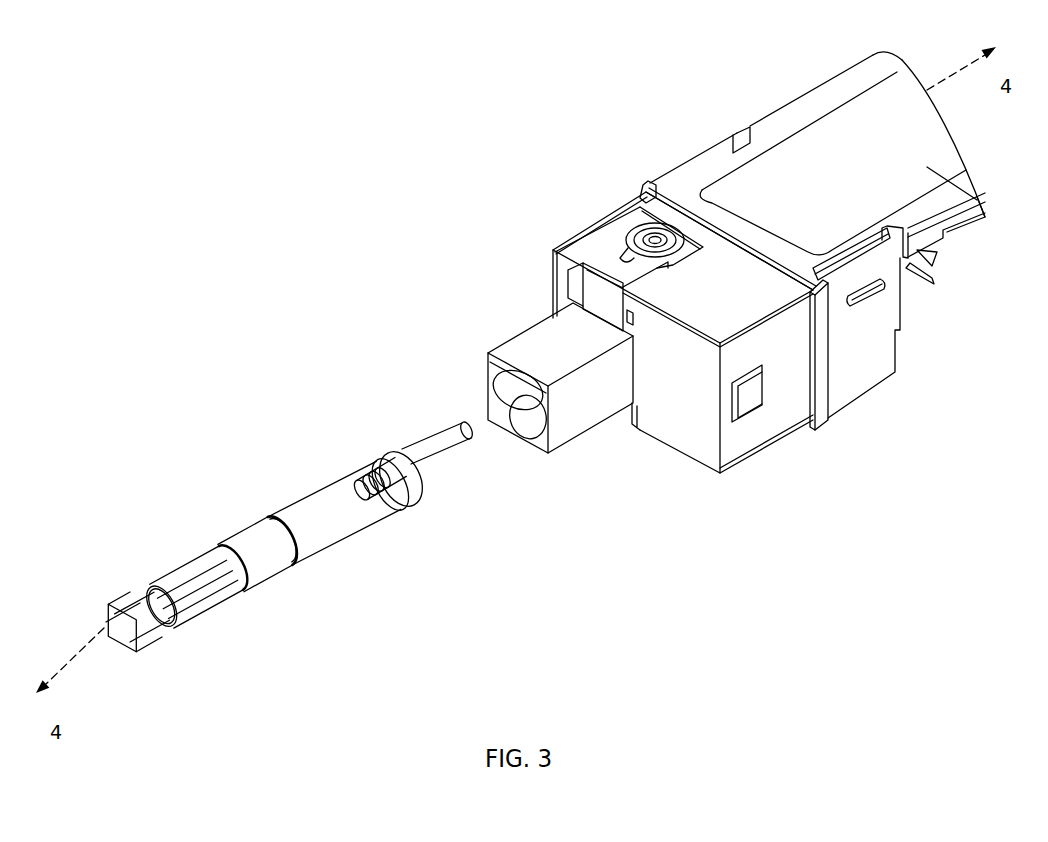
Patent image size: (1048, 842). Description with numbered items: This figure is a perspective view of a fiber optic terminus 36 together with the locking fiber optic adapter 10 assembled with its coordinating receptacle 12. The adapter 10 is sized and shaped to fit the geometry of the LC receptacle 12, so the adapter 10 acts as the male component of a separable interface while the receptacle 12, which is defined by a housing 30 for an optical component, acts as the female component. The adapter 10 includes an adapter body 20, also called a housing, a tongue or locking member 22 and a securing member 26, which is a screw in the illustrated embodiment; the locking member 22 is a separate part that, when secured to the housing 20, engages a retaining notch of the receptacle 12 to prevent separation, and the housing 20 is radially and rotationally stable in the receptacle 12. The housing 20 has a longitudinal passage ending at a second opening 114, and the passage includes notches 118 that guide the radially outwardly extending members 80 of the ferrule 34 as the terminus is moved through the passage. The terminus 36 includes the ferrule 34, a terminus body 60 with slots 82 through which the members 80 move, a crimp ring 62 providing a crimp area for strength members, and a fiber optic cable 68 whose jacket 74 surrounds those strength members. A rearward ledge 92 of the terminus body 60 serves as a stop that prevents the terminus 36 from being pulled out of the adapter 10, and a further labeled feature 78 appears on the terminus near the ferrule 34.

The fiber optic adapter 10 is at (547, 478).
The receptacle 12 is at (785, 478).
The adapter body 20 is at (537, 339).
The tongue 22 is at (600, 257).
The securing member 26 is at (632, 237).
The housing 30 is at (647, 188).
The ferrule 34 is at (448, 447).
The fiber optic terminus 36 is at (162, 537).
The terminus body 60 is at (292, 497).
The crimp ring 62 is at (187, 602).
The fiber optic cable 68 is at (84, 608).
The jacketing layers 74 is at (126, 640).
The flange 78 is at (390, 482).
The radially outwardly extending members 80 is at (404, 452).
The slots 82 is at (367, 480).
The rearward ledge 92 is at (265, 518).
The second opening 114 is at (505, 382).
The notches 118 is at (500, 418).